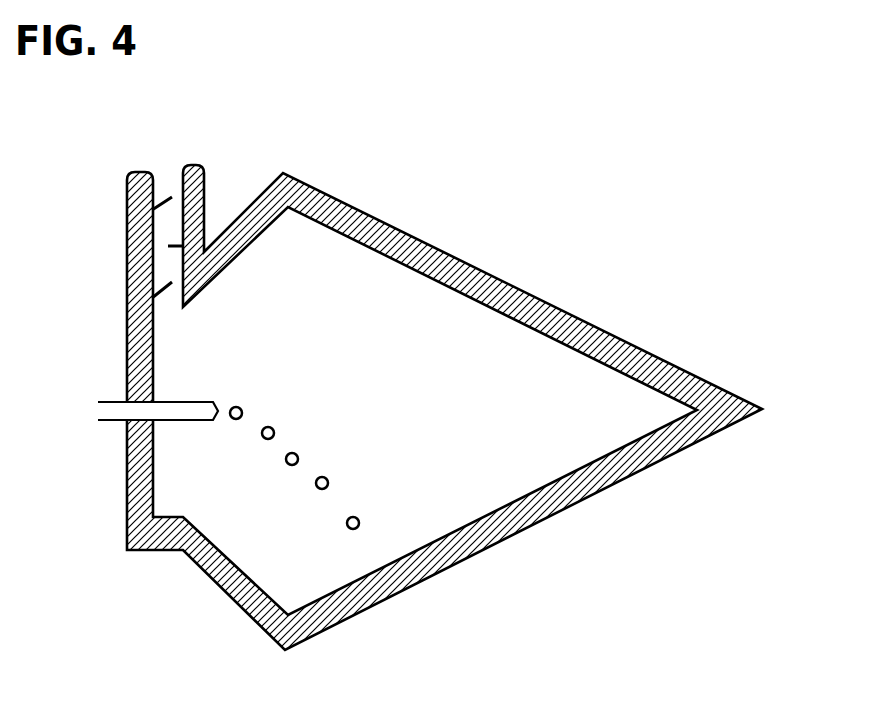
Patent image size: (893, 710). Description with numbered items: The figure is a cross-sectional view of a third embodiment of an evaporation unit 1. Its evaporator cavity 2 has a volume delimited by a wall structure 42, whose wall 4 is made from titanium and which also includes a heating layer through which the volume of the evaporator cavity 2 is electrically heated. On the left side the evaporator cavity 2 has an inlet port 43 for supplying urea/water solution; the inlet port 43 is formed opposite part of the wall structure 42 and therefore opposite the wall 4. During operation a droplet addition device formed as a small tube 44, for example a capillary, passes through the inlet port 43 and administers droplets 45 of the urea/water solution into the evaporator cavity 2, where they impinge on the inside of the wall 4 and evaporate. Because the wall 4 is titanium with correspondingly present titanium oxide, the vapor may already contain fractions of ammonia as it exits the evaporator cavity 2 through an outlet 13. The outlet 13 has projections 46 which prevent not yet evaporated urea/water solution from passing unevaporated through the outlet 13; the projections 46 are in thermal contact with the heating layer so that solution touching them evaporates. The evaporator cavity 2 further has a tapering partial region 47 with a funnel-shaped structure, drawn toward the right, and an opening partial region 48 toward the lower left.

The evaporation unit 1 is at (380, 163).
The evaporator cavity 2 is at (508, 415).
The wall 4 is at (615, 448).
The outlet 13 is at (180, 265).
The wall structure 42 is at (555, 303).
The inlet port 43 is at (140, 400).
The small tube 44 is at (188, 400).
The droplets 45 is at (360, 520).
The projections 46 is at (168, 195).
The tapering partial region 47 is at (640, 350).
The opening partial region 48 is at (227, 586).